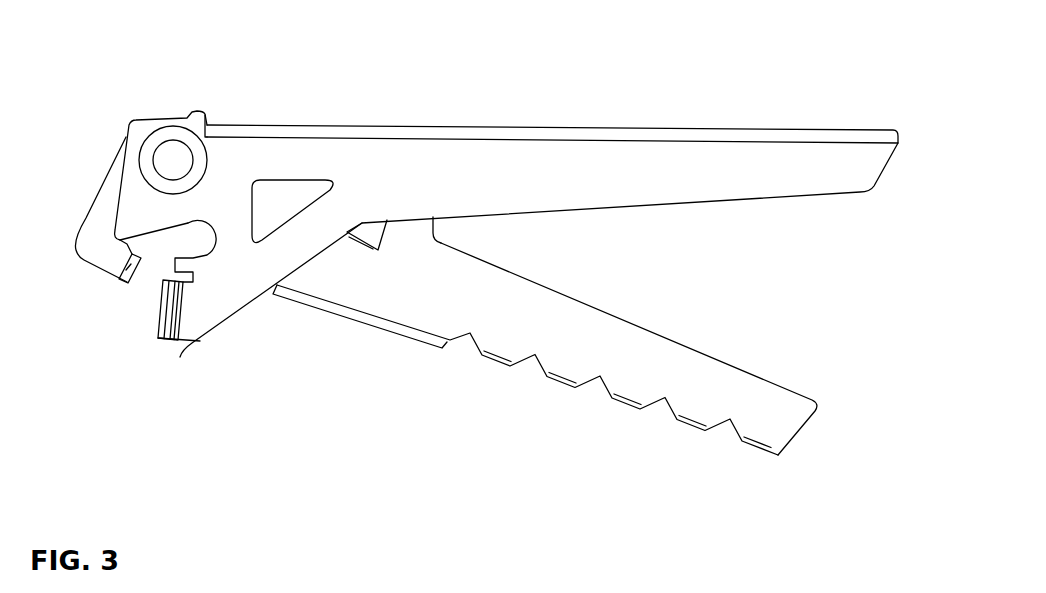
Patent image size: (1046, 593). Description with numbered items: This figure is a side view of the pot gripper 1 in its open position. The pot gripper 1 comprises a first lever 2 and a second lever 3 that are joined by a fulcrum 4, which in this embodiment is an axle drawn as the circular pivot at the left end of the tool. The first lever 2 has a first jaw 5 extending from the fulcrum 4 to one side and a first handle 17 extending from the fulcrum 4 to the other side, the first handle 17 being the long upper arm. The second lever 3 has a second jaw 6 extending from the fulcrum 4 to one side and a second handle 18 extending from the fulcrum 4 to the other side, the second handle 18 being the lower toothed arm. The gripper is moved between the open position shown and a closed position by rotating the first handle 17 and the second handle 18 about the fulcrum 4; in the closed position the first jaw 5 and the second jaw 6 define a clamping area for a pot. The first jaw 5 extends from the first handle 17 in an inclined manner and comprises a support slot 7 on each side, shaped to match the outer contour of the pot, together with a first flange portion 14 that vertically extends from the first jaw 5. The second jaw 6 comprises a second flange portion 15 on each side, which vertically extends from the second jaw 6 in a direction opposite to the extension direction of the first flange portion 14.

The pot gripper 1 is at (666, 72).
The first lever 2 is at (530, 172).
The second lever 3 is at (771, 401).
The fulcrum 4 is at (173, 160).
The first jaw 5 is at (200, 317).
The second jaw 6 is at (92, 242).
The support slot 7 is at (178, 245).
The first flange portion 14 is at (161, 313).
The second flange portion 15 is at (118, 278).
The first handle 17 is at (773, 153).
The second handle 18 is at (503, 347).